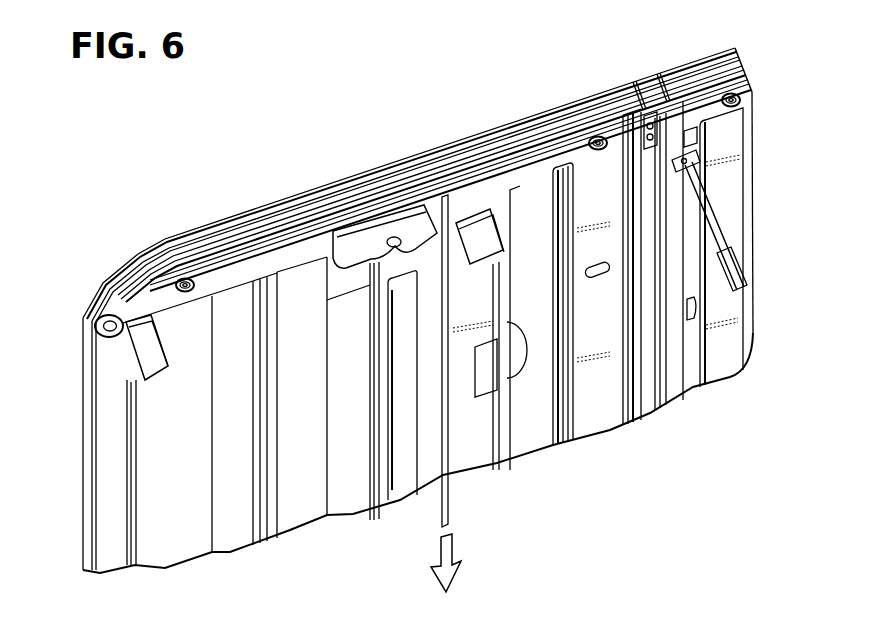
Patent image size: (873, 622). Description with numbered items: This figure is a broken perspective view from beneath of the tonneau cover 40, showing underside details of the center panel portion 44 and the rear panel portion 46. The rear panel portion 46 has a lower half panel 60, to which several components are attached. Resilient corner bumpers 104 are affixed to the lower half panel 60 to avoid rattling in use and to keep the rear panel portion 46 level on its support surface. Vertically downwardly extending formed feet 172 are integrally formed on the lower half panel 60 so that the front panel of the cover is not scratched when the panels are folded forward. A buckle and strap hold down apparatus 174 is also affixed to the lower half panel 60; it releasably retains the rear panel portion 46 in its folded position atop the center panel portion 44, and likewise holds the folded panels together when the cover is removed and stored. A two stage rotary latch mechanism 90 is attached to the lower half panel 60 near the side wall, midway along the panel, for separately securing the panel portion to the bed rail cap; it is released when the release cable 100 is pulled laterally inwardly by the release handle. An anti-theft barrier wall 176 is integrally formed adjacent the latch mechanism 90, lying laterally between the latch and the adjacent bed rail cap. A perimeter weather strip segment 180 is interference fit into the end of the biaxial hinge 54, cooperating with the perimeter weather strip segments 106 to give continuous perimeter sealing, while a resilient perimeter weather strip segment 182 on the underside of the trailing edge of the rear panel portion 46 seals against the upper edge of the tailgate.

The tonneau cover 40 is at (175, 168).
The center panel portion 44 is at (735, 395).
The rear panel portion 46 is at (354, 518).
The second biaxial hinge 54 is at (654, 412).
The lower half panel 60 is at (192, 542).
The two stage rotary latch mechanism 90 is at (352, 226).
The release cable 100 is at (448, 445).
The resilient corner bumper 104 is at (182, 278).
The perimeter weather strip segment 106 is at (266, 238).
The formed foot 172 is at (482, 220).
The buckle and strap hold down apparatus 174 is at (718, 222).
The anti-theft barrier wall 176 is at (366, 242).
The perimeter weather strip segment 180 is at (648, 80).
The perimeter weather strip segment 182 is at (112, 488).